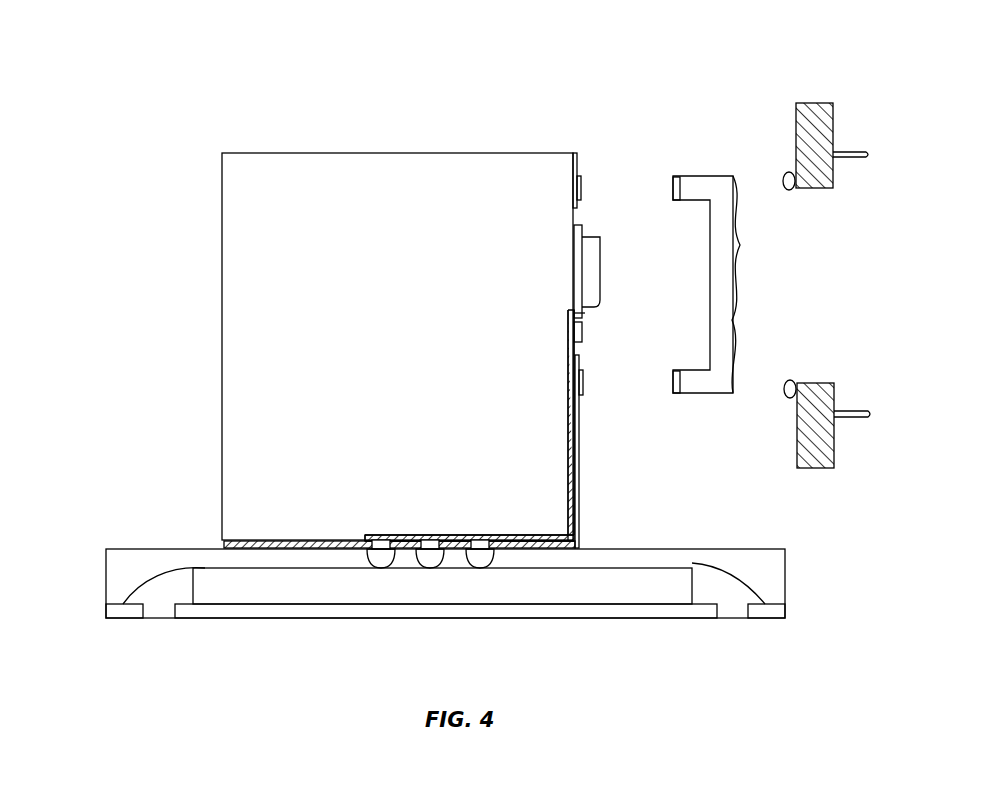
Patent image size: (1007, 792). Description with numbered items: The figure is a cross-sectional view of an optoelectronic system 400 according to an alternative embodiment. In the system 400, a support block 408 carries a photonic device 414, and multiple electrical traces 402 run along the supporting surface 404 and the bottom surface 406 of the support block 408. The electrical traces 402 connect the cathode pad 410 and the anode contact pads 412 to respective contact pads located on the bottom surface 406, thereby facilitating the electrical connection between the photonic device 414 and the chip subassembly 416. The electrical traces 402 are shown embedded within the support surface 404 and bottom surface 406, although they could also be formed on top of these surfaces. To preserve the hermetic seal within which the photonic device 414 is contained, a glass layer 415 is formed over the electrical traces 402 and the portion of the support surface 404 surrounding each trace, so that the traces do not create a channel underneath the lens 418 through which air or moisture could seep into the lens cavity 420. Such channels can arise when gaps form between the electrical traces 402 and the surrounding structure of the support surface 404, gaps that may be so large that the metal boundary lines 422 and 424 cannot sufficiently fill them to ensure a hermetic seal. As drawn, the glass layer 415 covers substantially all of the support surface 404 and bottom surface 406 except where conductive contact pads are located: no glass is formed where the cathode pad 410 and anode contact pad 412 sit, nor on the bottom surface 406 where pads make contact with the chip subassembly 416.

The optoelectronic system 400 is at (562, 70).
The electrical traces 402 is at (572, 398).
The supporting surface 404 is at (575, 210).
The bottom surface 406 is at (232, 541).
The support block 408 is at (297, 153).
The cathode pad 410 is at (585, 233).
The anode contact pad 412 is at (575, 350).
The photonic device 414 is at (602, 262).
The glass layer 415 is at (580, 492).
The chip subassembly 416 is at (94, 550).
The lens 418 is at (720, 176).
The lens cavity 420 is at (672, 332).
The metal boundary line 422 is at (584, 176).
The metal boundary line 424 is at (672, 190).